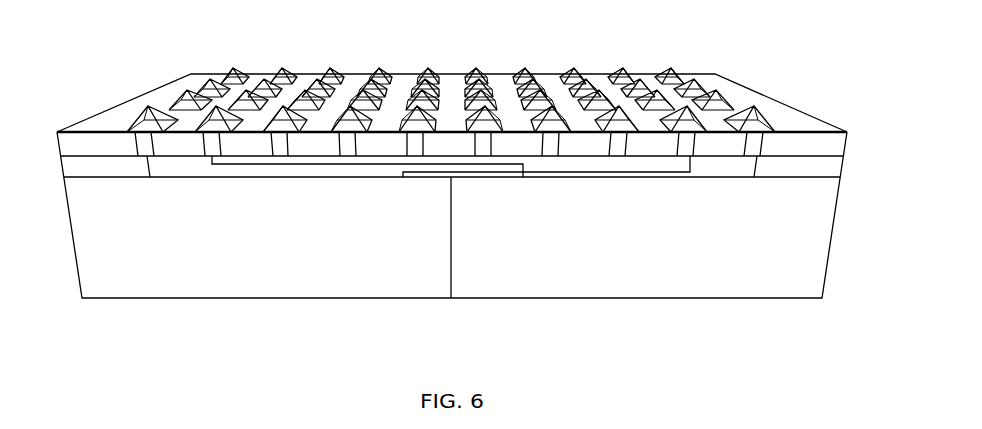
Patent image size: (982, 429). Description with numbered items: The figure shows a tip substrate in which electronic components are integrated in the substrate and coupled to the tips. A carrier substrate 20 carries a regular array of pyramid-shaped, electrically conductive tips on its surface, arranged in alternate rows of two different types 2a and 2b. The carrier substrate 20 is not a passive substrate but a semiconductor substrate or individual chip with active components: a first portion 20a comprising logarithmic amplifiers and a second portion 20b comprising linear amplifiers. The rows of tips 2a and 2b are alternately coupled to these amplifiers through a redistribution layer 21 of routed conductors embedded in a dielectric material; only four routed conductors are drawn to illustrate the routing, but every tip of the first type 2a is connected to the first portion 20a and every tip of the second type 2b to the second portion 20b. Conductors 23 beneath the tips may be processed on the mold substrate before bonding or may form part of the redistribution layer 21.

The tips of the first type 2a is at (233, 68).
The tips of the second type 2b is at (282, 68).
The carrier substrate 20 is at (448, 207).
The first portion of the carrier substrate 20a is at (268, 242).
The second portion of the carrier substrate 20b is at (651, 242).
The redistribution layer 21 is at (107, 167).
The conductors 23 is at (150, 145).